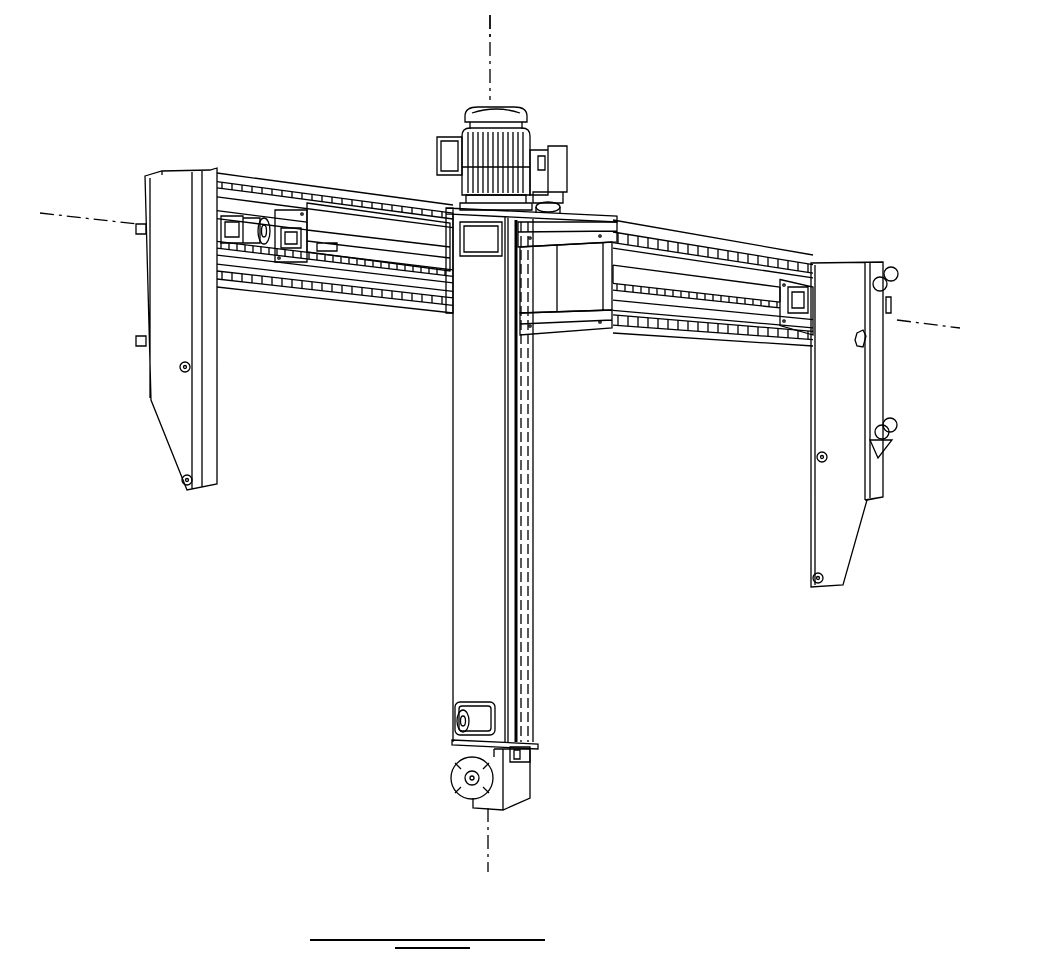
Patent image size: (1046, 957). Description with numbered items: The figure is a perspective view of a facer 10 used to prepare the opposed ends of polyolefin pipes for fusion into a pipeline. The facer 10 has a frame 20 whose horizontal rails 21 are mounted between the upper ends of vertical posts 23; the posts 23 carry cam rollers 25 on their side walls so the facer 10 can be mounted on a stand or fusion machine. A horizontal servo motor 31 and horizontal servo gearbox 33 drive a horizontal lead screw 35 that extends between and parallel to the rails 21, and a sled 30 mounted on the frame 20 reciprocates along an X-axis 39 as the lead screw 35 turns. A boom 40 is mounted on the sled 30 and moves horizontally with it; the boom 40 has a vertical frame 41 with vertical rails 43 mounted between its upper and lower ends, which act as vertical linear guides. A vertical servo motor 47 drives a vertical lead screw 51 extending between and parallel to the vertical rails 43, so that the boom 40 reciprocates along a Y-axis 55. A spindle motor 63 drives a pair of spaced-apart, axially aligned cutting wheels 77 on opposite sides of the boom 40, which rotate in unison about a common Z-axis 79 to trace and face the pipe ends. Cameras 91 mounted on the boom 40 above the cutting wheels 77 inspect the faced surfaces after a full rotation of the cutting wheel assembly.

The facer 10 is at (275, 82).
The frame 20 is at (738, 140).
The horizontal rails 21 is at (375, 194).
The vertical posts 23 is at (208, 403).
The cam rollers 25 is at (882, 273).
The sled 30 is at (633, 117).
The horizontal servo motor 31 is at (238, 214).
The horizontal servo gearbox 33 is at (288, 262).
The horizontal lead screw 35 is at (370, 249).
The X-axis 39 is at (87, 213).
The boom 40 is at (425, 571).
The vertical frame 41 is at (453, 637).
The vertical rails 43 is at (565, 522).
The vertical servo motor 47 is at (558, 144).
The vertical lead screw 51 is at (527, 440).
The Y-axis 55 is at (490, 30).
The spindle motor 63 is at (466, 106).
The cutting wheels 77 is at (532, 770).
The Z-axis 79 is at (542, 712).
The cameras 91 is at (452, 735).